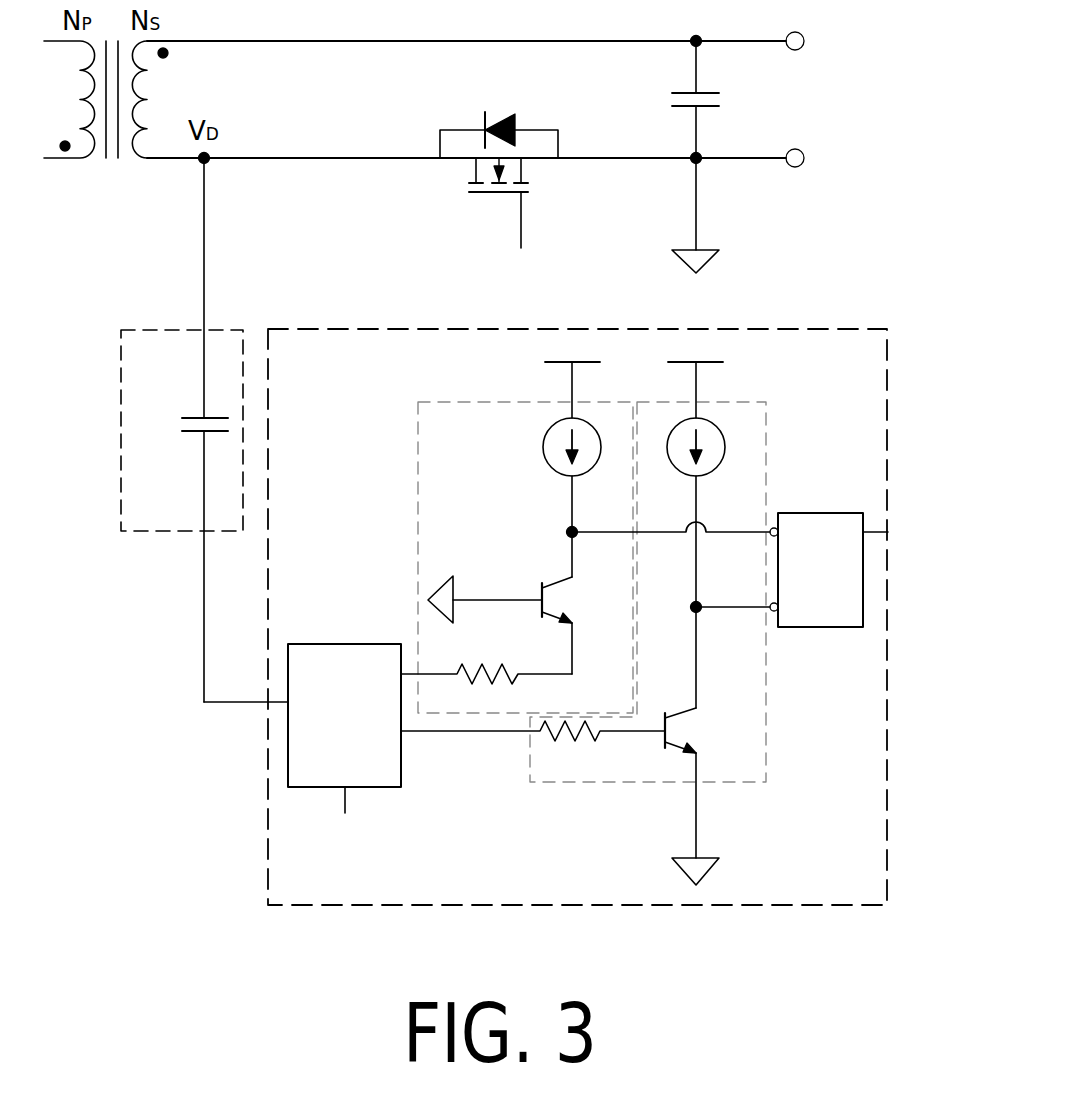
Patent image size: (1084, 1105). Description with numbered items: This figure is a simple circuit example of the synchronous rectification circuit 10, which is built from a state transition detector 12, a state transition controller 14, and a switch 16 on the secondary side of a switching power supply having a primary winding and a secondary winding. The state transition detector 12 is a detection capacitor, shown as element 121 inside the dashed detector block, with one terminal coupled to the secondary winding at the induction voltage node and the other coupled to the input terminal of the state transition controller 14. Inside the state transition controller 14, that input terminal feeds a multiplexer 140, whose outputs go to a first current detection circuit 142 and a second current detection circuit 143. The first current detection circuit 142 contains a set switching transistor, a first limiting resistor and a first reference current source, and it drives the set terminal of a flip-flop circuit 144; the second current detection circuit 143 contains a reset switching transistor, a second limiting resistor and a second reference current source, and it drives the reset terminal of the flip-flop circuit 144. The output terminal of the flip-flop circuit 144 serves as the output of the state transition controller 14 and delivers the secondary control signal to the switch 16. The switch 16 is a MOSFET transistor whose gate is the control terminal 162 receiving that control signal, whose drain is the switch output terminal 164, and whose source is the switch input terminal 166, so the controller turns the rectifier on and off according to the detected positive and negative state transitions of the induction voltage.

The synchronous rectification circuit 10 is at (800, 293).
The state transition detector 12 is at (149, 430).
The detection capacitor CDET 121 is at (196, 416).
The state transition controller 14 is at (887, 372).
The multiplexer 140 is at (388, 787).
The first current detection circuit 142 is at (418, 443).
The second current detection circuit 143 is at (766, 447).
The flip-flop circuit 144 is at (843, 627).
The switch 16 is at (477, 169).
The control terminal 162 is at (519, 194).
The switch output terminal 164 is at (438, 156).
The switch input terminal 166 is at (560, 155).